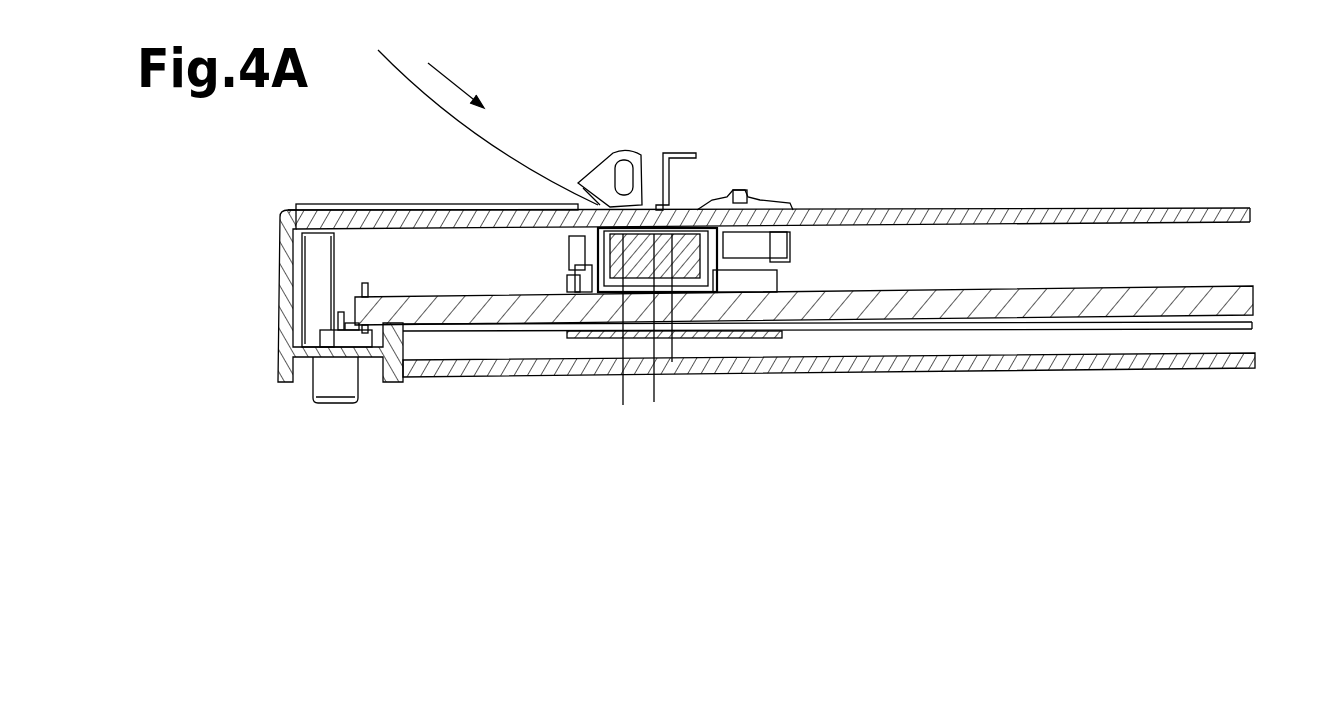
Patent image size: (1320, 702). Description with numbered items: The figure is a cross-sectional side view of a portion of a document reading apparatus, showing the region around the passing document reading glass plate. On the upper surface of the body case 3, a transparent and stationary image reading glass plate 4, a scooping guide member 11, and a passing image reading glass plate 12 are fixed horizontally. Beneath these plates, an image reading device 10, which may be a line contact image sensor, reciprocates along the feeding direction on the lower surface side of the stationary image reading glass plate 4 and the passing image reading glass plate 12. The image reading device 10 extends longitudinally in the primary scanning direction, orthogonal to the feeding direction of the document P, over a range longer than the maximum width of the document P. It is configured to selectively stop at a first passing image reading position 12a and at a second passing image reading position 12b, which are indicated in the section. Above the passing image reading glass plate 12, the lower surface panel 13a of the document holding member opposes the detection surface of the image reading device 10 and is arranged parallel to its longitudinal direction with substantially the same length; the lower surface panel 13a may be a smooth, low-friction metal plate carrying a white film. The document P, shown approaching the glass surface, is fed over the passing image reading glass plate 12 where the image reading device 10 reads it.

The body case 3 is at (268, 275).
The stationary image reading glass plate 4 is at (985, 213).
The image reading device 10 is at (673, 368).
The scooping guide member 11 is at (728, 193).
The passing image reading glass plate 12 is at (443, 230).
The first passing image reading position 12a is at (622, 387).
The second passing image reading position 12b is at (655, 390).
The lower surface panel 13a is at (657, 158).
The document P is at (482, 136).